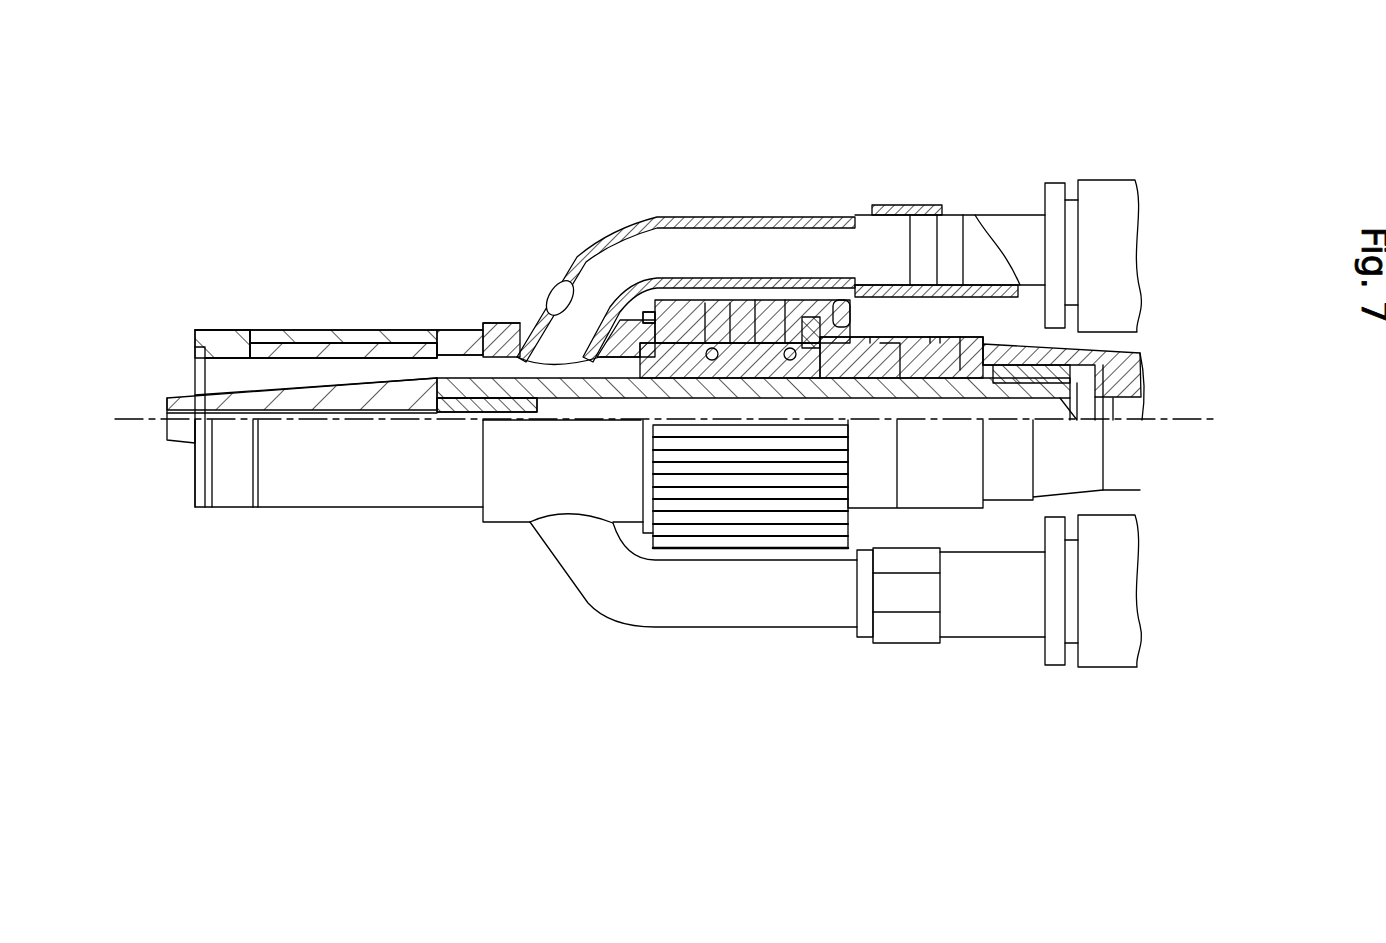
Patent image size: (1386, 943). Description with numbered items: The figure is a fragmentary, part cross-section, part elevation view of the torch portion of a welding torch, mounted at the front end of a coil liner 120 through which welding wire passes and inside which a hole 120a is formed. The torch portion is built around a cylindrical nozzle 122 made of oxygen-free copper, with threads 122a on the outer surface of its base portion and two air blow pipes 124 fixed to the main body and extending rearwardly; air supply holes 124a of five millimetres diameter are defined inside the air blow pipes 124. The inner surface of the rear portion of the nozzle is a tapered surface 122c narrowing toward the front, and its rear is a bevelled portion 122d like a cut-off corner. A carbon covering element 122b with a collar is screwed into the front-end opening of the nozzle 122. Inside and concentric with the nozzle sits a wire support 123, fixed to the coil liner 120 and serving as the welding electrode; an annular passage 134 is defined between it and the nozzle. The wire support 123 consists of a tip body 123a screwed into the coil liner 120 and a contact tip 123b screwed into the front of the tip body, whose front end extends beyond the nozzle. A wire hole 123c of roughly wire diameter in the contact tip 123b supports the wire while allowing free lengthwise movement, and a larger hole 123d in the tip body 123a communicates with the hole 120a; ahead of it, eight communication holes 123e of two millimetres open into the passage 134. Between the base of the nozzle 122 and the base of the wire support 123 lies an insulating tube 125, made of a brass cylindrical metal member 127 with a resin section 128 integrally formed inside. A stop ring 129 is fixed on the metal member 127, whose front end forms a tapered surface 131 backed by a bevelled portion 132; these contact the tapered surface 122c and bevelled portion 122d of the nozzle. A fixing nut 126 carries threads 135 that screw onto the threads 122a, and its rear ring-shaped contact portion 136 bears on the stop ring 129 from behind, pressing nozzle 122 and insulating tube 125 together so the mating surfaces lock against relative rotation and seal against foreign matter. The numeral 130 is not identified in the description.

The coil liner 120 is at (1143, 377).
The hole 120a is at (1144, 407).
The cylindrical nozzle 122 is at (468, 318).
The threads 122a is at (647, 312).
The cylindrical covering element 122b is at (213, 345).
The tapered surface 122c is at (703, 343).
The bevelled portion 122d is at (769, 333).
The wire support 123 is at (396, 367).
The tip body 123a is at (626, 437).
The contact tip 123b is at (360, 400).
The wire hole 123c is at (232, 413).
The hole 123d is at (940, 420).
The communication holes 123e is at (628, 397).
The air blow pipes 124 is at (570, 272).
The air supply holes 124a is at (550, 292).
The insulating tube 125 is at (1105, 100).
The fixing nut 126 is at (725, 483).
The cylindrical metal member 127 is at (900, 327).
The resin section 128 is at (967, 337).
The stop ring 129 is at (806, 320).
The sleeve 130 is at (890, 340).
The tapered surface 131 is at (750, 385).
The bevelled portion 132 is at (776, 360).
The annular passage 134 is at (287, 373).
The threads 135 is at (735, 322).
The contact portion 136 is at (845, 300).